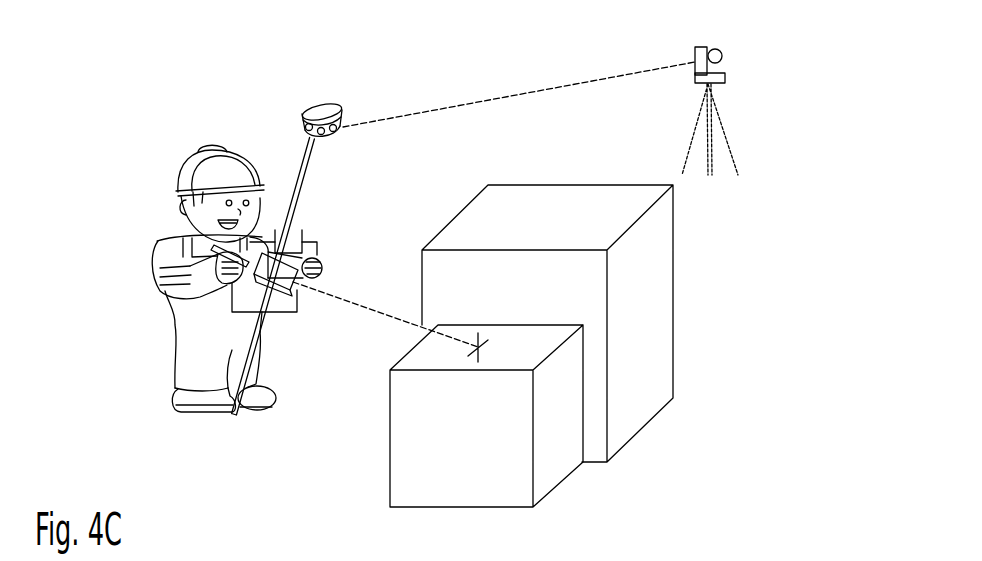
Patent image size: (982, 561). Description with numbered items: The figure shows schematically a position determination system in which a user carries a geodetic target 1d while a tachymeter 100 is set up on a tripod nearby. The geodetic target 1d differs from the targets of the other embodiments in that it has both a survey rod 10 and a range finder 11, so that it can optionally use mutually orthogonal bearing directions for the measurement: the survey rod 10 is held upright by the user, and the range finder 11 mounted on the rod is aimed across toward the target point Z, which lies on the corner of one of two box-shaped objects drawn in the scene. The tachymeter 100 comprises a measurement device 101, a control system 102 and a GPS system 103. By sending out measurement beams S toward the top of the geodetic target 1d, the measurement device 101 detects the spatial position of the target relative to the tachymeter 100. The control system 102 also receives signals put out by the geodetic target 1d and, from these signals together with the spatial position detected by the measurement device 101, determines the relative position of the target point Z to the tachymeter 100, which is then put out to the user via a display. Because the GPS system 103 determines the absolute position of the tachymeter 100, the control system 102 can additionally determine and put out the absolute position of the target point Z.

The geodetic target 1d is at (325, 109).
The survey rod 10 is at (265, 333).
The range finder 11 is at (280, 280).
The tachymeter 100 is at (733, 99).
The measurement device 101 is at (722, 57).
The control system 102 is at (695, 53).
The GPS system 103 is at (695, 80).
The measurement beams S is at (532, 91).
The target point Z is at (400, 324).